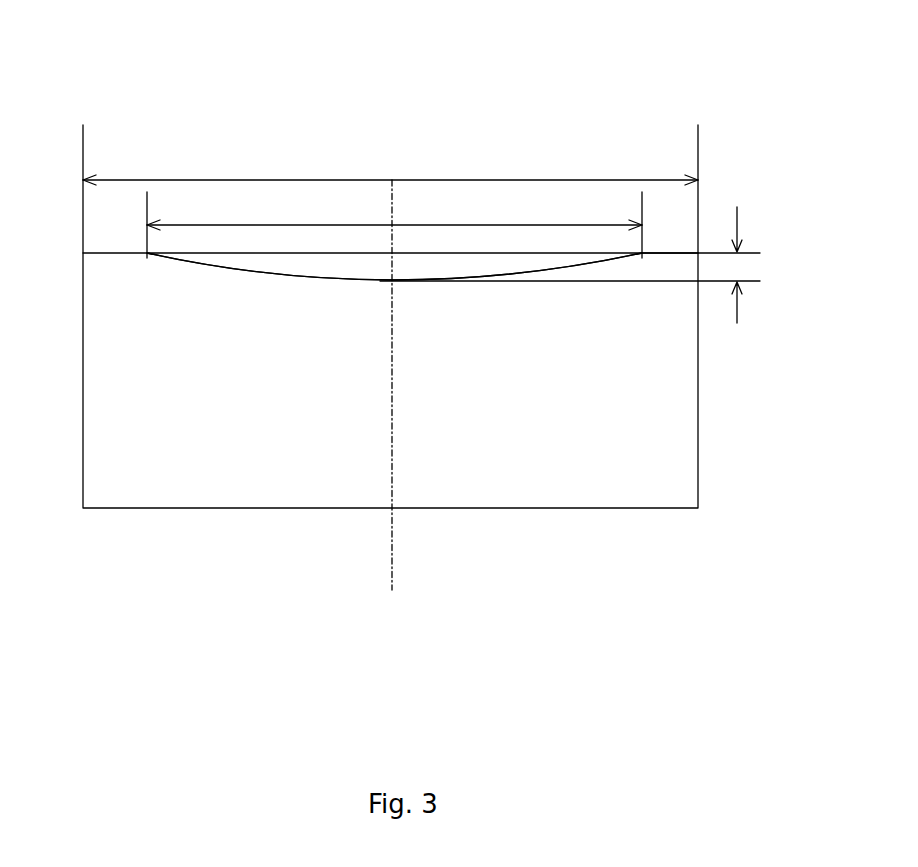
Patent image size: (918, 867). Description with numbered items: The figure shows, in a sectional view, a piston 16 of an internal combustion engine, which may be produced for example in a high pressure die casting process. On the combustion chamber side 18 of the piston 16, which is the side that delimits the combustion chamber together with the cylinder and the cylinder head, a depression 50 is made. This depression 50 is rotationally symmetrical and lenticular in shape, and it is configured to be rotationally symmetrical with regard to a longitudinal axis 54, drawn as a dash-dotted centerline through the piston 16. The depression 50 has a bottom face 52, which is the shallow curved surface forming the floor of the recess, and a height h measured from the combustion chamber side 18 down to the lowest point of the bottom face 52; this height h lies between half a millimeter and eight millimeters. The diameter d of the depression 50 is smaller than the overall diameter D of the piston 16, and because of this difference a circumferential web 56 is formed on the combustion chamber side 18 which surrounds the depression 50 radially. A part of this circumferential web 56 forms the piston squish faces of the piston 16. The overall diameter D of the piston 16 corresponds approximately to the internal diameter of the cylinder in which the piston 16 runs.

The piston 16 is at (618, 124).
The combustion chamber side 18 is at (668, 253).
The depression 50 is at (333, 262).
The bottom face 52 is at (265, 277).
The longitudinal axis 54 is at (392, 580).
The circumferential web 56 is at (118, 253).
The overall diameter D is at (345, 178).
The diameter of the depression d is at (487, 224).
The height h is at (738, 308).